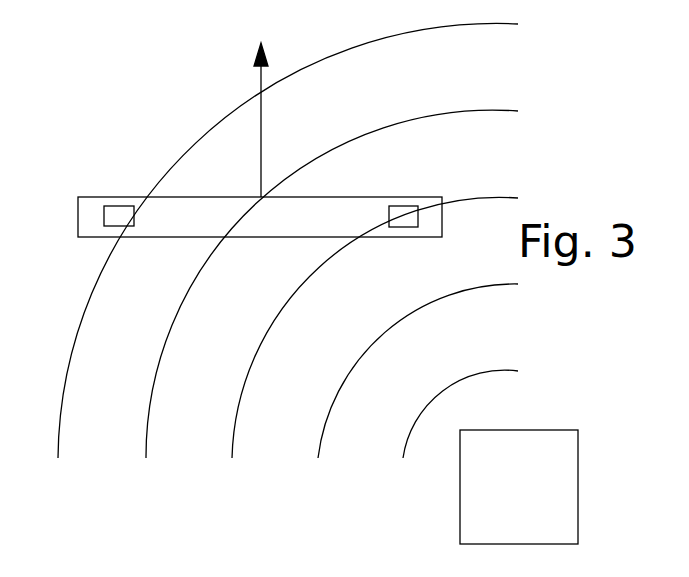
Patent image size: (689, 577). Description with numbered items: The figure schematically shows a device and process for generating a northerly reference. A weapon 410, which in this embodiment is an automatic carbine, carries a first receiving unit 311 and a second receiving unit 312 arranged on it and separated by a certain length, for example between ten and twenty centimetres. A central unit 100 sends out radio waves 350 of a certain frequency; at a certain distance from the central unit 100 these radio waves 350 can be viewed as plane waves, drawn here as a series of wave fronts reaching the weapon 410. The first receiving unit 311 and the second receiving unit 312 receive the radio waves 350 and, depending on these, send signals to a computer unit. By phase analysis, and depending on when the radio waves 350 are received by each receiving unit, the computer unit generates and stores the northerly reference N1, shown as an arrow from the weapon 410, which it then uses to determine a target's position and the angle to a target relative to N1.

The central unit 100 is at (538, 497).
The first receiving unit 311 is at (112, 205).
The second receiving unit 312 is at (398, 203).
The weapon 410 is at (260, 217).
The radio waves 350 is at (323, 428).
The northerly reference N1 is at (244, 120).